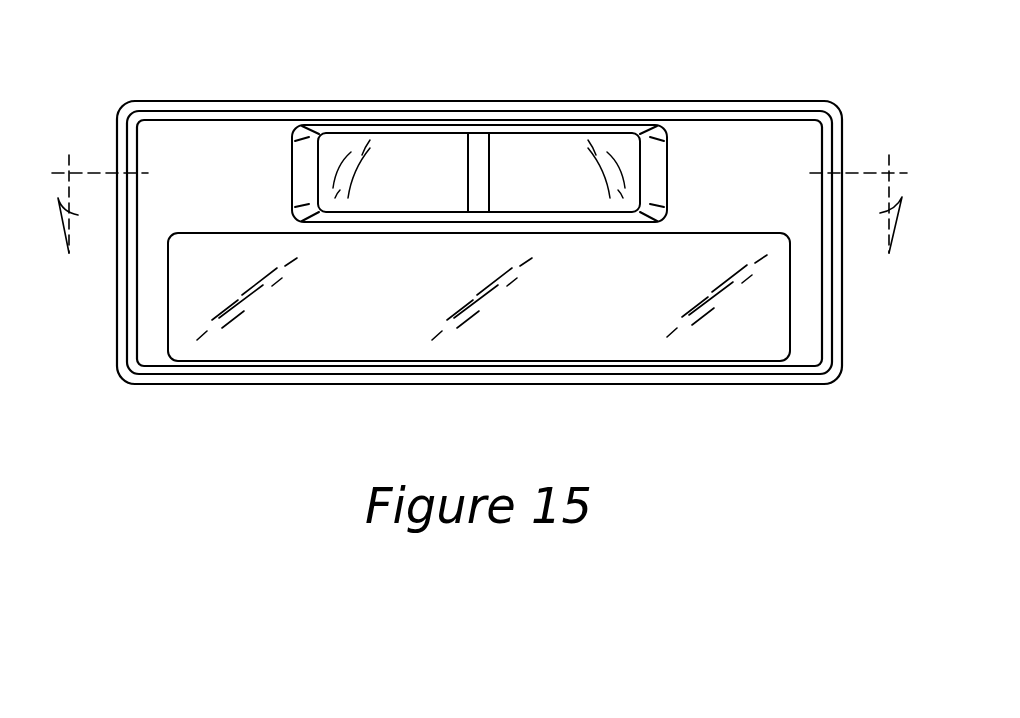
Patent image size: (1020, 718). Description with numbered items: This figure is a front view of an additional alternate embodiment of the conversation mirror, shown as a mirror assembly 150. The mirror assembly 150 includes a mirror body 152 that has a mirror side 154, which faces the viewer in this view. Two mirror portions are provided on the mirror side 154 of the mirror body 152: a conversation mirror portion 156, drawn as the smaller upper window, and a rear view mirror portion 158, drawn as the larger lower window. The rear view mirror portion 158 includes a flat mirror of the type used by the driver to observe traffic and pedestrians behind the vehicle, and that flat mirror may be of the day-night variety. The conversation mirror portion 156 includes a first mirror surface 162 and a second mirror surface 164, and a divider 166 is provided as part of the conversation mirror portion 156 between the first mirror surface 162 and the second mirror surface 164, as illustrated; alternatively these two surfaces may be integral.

The mirror assembly 150 is at (484, 235).
The mirror body 152 is at (805, 330).
The mirror side 154 is at (755, 138).
The conversation mirror portion 156 is at (479, 116).
The rear view mirror portion 158 is at (640, 343).
The first mirror surface 162 is at (403, 150).
The second mirror surface 164 is at (571, 152).
The divider 166 is at (478, 148).